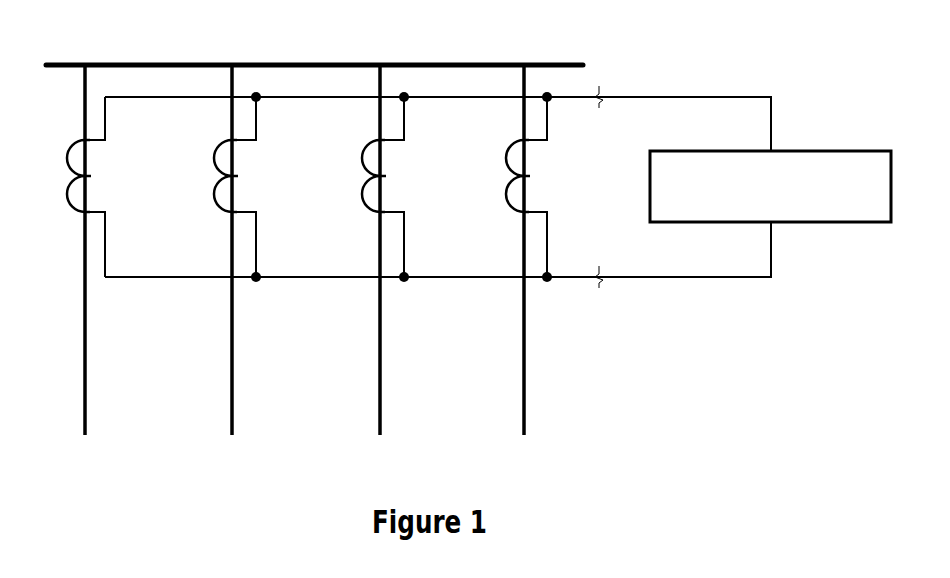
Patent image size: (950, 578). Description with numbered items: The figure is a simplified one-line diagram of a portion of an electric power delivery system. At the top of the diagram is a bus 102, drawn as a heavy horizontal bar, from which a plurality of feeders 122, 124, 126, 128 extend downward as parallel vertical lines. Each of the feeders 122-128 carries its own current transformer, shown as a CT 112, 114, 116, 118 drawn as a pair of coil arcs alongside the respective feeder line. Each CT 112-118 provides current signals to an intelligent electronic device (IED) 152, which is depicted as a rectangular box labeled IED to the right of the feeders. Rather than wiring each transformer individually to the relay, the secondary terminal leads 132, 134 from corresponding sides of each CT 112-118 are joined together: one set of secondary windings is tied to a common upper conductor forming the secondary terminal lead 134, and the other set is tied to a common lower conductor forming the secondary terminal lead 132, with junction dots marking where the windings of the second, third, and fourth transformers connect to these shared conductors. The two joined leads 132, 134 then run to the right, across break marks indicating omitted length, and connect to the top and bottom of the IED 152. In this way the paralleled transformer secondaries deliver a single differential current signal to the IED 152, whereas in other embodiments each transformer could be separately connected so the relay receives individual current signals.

The bus 102 is at (65, 63).
The CT 112 is at (68, 157).
The CT 114 is at (215, 157).
The CT 116 is at (363, 157).
The CT 118 is at (508, 157).
The feeder 122 is at (81, 403).
The feeder 124 is at (229, 403).
The feeder 126 is at (378, 403).
The feeder 128 is at (521, 403).
The secondary terminal lead 132 is at (677, 277).
The secondary terminal lead 134 is at (709, 97).
The intelligent electronic device (IED) 152 is at (846, 151).